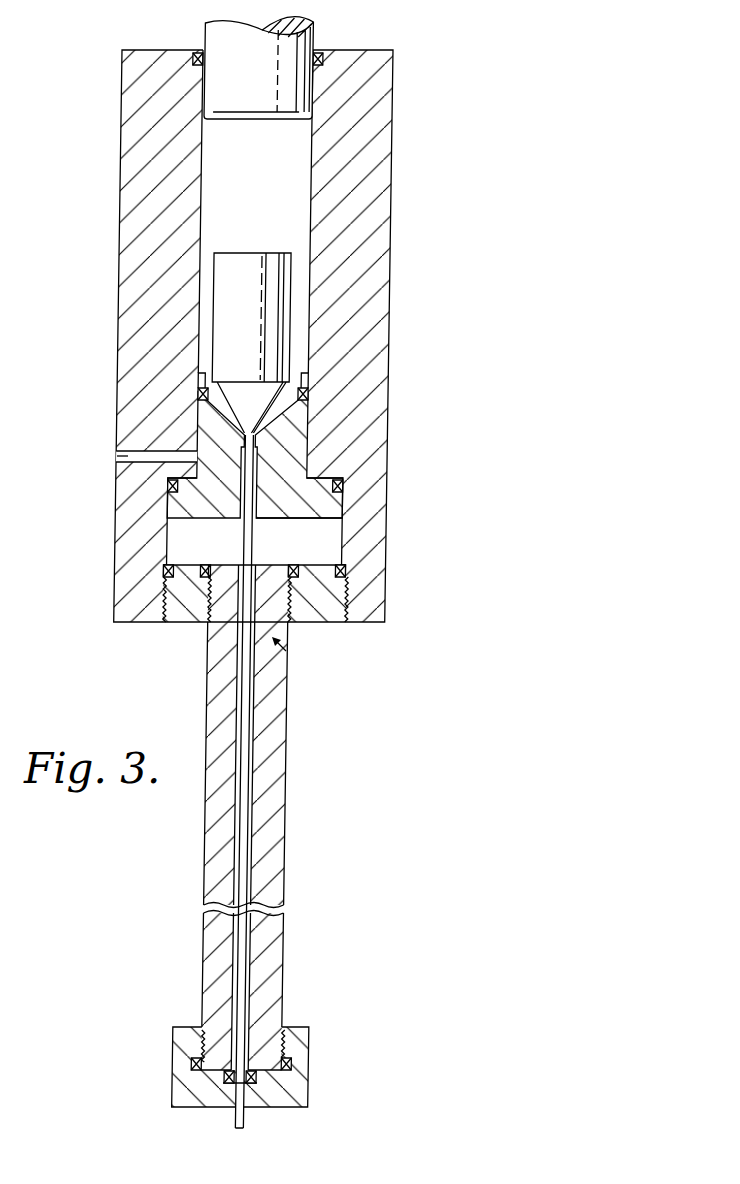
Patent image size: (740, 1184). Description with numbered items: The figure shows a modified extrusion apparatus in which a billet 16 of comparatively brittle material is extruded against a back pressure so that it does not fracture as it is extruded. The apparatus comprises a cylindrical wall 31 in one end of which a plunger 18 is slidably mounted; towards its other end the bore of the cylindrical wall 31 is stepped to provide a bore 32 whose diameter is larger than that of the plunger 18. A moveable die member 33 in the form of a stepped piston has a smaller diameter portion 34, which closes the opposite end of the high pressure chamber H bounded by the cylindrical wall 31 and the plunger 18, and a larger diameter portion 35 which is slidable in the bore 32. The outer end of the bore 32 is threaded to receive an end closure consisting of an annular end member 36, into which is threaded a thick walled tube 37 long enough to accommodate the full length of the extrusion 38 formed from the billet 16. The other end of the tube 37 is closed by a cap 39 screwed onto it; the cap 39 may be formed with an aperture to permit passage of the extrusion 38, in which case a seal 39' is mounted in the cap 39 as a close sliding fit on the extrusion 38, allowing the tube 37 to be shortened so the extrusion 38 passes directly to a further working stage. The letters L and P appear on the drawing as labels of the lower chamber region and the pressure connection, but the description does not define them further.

The billet 16 is at (250, 266).
The plunger 18 is at (218, 37).
The cylindrical wall 31 is at (378, 205).
The bore 32 is at (334, 551).
The moveable die member 33 is at (197, 441).
The smaller diameter portion 34 is at (303, 430).
The larger diameter portion 35 is at (288, 516).
The annular end member 36 is at (329, 624).
The thick walled tube 37 is at (270, 884).
The extrusion 38 is at (242, 864).
The cap 39 is at (267, 1067).
The seal 39' is at (186, 1072).
The high pressure chamber H is at (255, 211).
The low pressure chamber L is at (255, 541).
The pressure inlet P is at (122, 456).